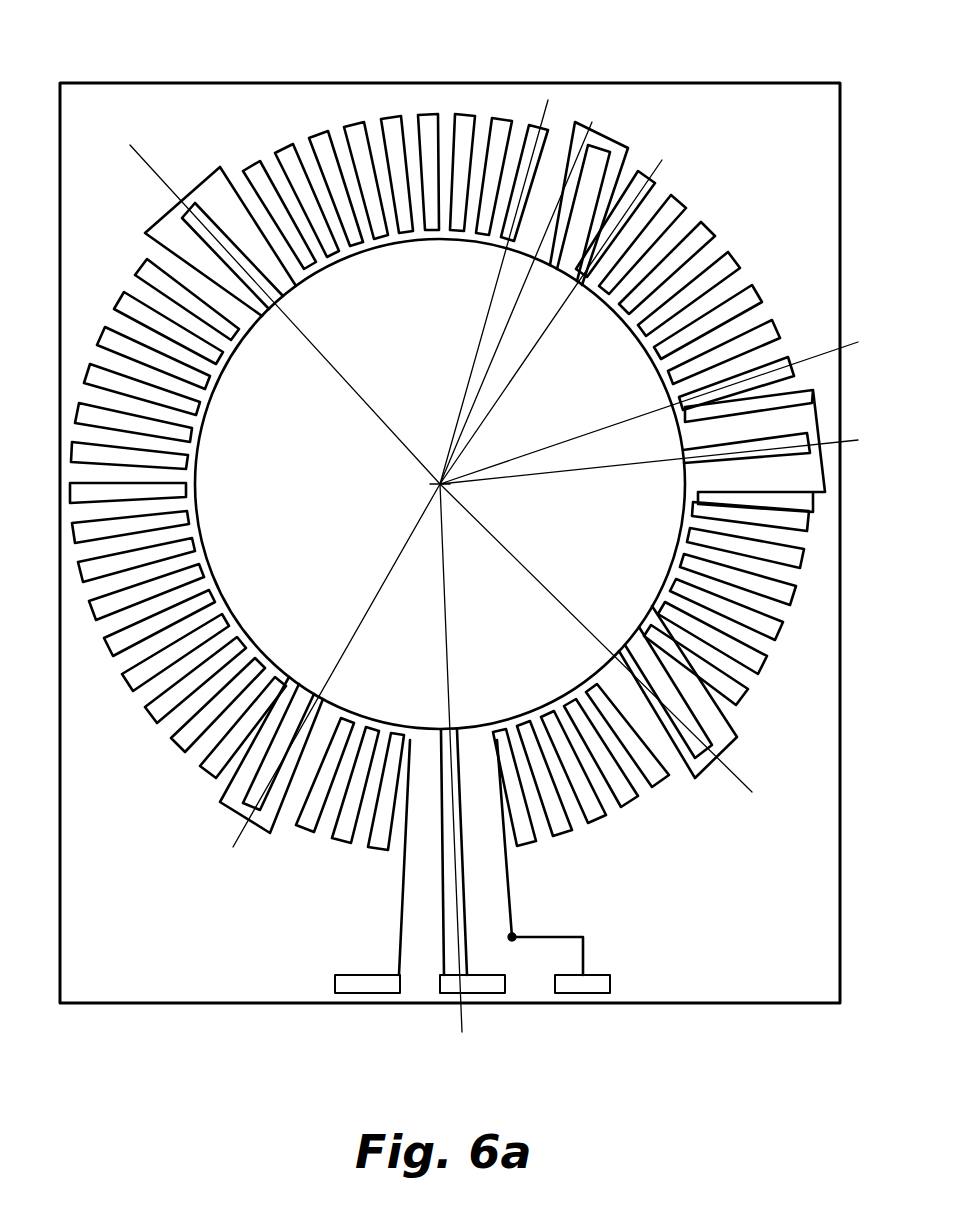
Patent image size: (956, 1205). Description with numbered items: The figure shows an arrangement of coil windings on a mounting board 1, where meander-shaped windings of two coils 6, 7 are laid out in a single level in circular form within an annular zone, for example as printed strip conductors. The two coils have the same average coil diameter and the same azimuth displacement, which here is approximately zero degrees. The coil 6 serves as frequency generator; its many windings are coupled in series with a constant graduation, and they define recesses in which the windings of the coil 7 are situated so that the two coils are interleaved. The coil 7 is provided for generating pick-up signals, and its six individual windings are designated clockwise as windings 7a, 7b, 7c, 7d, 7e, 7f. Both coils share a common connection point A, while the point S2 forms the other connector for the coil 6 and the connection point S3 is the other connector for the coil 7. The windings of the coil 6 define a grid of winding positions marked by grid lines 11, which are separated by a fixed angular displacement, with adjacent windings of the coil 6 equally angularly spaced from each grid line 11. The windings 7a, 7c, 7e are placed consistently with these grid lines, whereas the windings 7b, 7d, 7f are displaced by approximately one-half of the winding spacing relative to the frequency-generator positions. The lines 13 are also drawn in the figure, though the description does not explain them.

The mounting board 1 is at (840, 975).
The coil 6 is at (631, 803).
The coil 7 is at (706, 757).
The winding 7a is at (450, 730).
The winding 7b is at (312, 692).
The winding 7c is at (277, 302).
The winding 7d is at (551, 268).
The winding 7e is at (683, 450).
The winding 7f is at (621, 652).
The grid lines 11 is at (476, 1032).
The radial line 13 is at (230, 883).
The point S2 is at (337, 983).
The connection point S3 is at (505, 983).
The common connection point A is at (610, 983).